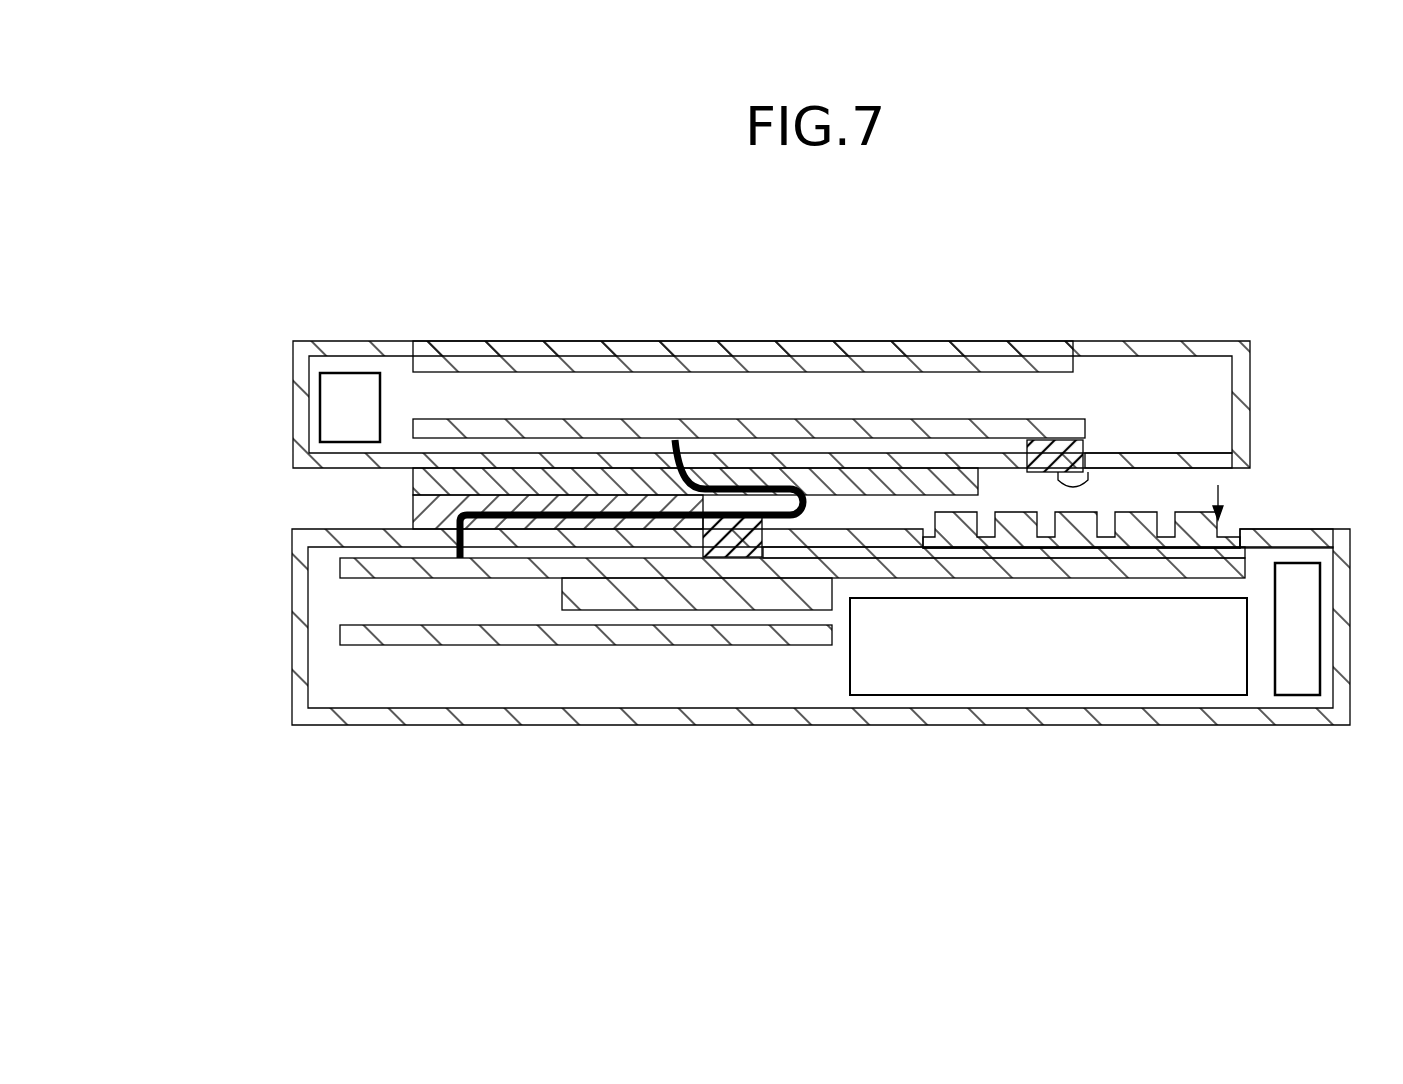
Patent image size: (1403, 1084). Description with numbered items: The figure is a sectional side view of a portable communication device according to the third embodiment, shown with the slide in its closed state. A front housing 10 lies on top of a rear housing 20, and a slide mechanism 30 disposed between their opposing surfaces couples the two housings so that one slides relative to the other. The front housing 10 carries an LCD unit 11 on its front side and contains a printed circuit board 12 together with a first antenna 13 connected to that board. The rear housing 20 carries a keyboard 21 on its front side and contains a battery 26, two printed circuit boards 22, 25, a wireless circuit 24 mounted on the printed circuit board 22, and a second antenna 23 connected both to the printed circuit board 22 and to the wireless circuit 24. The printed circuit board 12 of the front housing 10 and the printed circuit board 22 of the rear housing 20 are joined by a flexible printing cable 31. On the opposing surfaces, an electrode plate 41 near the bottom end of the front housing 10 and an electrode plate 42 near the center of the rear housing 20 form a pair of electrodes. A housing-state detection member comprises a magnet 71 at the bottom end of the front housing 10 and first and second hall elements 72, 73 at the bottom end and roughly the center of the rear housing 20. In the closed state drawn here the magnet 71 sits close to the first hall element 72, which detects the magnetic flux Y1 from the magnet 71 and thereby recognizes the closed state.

The front housing 10 is at (380, 341).
The LCD unit 11 is at (1050, 341).
The printed circuit board 12 is at (722, 419).
The first antenna 13 is at (330, 412).
The rear housing 20 is at (292, 690).
The keyboard 21 is at (1162, 548).
The printed circuit board 22 is at (340, 568).
The second antenna 23 is at (1302, 663).
The wireless circuit 24 is at (677, 612).
The printed circuit board 25 is at (483, 647).
The battery 26 is at (1070, 660).
The slide mechanism 30 is at (410, 517).
The flexible printing cable 31 is at (768, 478).
The electrode plate 41 is at (1095, 462).
The electrode plate 42 is at (733, 557).
The magnet 71 is at (1205, 452).
The first hall element 72 is at (1243, 547).
The second hall element 73 is at (907, 558).
The magnetic flux Y1 is at (1218, 485).